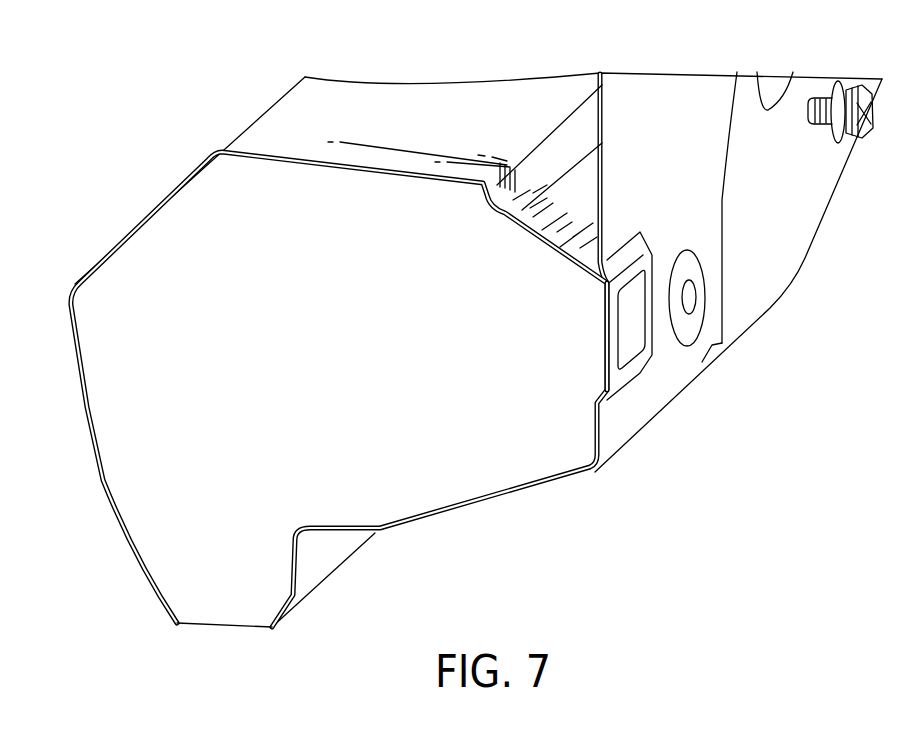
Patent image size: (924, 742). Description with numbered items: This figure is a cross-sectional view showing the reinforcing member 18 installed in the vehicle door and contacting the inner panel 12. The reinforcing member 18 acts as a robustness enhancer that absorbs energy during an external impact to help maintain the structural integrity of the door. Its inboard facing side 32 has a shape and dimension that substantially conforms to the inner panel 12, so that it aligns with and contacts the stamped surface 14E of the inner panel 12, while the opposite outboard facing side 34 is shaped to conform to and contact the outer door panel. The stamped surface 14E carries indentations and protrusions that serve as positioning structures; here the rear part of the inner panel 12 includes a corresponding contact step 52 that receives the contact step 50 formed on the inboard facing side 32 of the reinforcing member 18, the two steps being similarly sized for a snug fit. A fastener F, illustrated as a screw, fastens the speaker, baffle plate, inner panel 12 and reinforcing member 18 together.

The reinforcing member 18 is at (360, 72).
The inner panel 12 is at (601, 88).
The stamped surface 14E is at (597, 182).
The outboard facing side 34 is at (73, 334).
The contact step 50 is at (607, 314).
The corresponding contact step 52 is at (633, 250).
The inboard facing side 32 is at (613, 342).
The fastener F is at (873, 115).